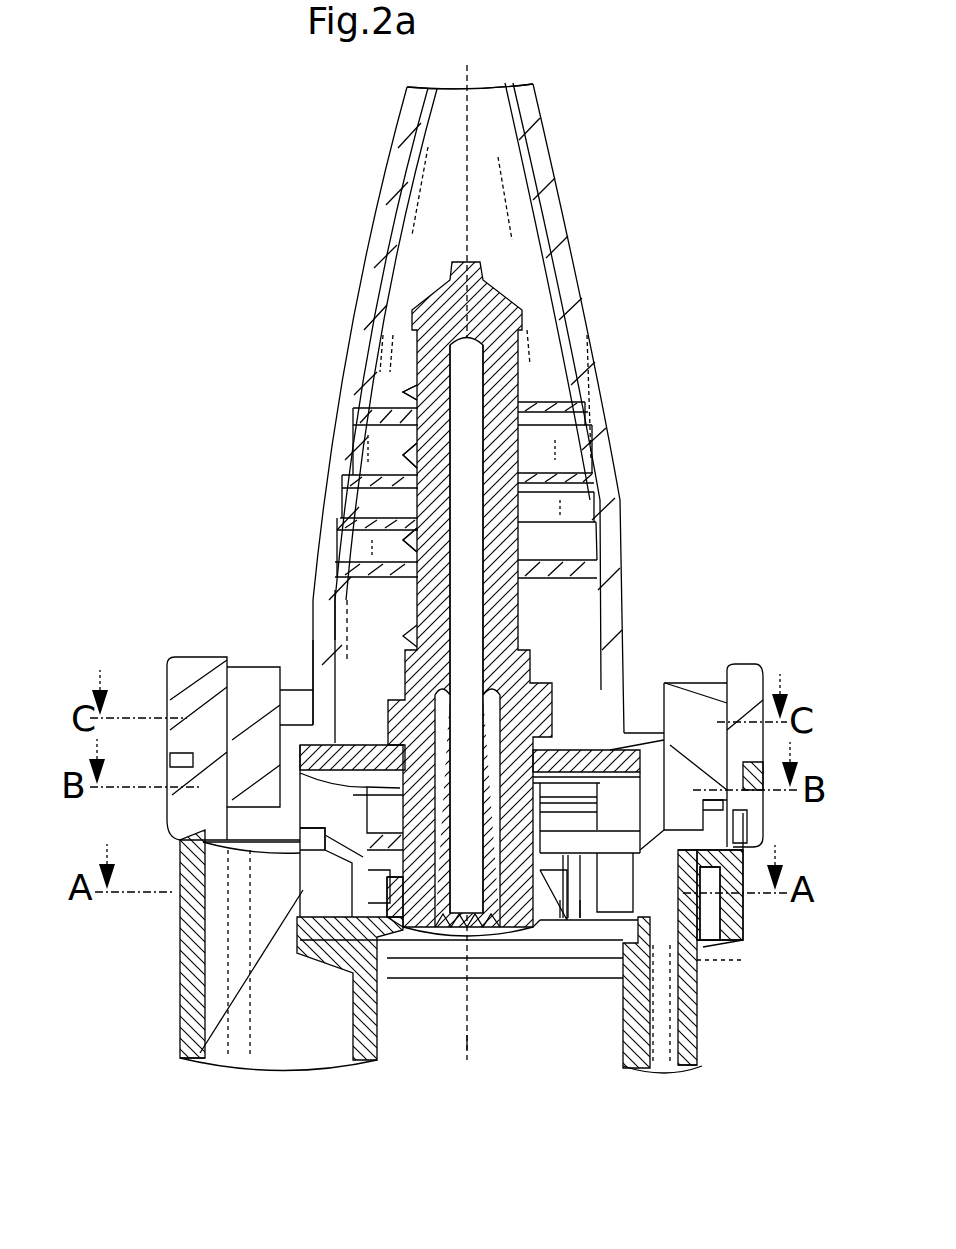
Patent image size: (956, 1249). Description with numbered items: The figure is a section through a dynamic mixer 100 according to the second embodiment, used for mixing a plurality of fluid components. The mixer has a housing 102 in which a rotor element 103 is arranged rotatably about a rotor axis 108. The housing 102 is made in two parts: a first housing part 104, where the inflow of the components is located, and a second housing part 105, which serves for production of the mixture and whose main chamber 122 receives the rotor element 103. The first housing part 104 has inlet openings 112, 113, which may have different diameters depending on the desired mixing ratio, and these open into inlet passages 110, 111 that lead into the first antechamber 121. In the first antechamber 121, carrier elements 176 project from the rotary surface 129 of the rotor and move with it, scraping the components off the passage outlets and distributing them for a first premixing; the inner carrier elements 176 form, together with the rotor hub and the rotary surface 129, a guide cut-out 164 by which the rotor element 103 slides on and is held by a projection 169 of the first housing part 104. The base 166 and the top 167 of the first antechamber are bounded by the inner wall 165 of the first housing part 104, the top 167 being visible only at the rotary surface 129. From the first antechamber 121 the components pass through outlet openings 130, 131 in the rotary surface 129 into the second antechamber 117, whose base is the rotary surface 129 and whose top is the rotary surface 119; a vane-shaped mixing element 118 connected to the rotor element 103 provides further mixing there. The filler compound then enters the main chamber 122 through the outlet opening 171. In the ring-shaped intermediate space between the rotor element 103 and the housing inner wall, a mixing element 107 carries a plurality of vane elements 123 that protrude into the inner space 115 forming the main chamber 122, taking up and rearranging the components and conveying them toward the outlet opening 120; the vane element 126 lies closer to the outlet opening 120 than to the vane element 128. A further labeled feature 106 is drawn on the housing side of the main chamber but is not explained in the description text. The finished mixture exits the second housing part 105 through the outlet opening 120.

The dynamic mixer 100 is at (230, 347).
The housing 102 is at (628, 547).
The rotor element 103 is at (512, 258).
The first housing part 104 is at (190, 918).
The second housing part 105 is at (172, 690).
The thread 106 is at (582, 472).
The mixing element 107 is at (595, 574).
The rotor axis 108 is at (470, 1042).
The inlet passage 110 is at (227, 965).
The inlet passage 111 is at (672, 1015).
The inlet opening 112 is at (257, 1075).
The inlet opening 113 is at (660, 1068).
The inner space 115 is at (365, 630).
The second antechamber 117 is at (200, 805).
The mixing element 118 is at (737, 900).
The rotary surface 119 is at (190, 762).
The outlet opening 120 is at (513, 83).
The first antechamber 121 is at (580, 918).
The main chamber 122 is at (320, 600).
The vane elements 123 is at (355, 414).
The vane element 126 is at (345, 480).
The vane element 128 is at (345, 565).
The rotary surface 129 is at (195, 1053).
The outlet opening 130 is at (220, 850).
The outlet opening 131 is at (563, 922).
The guide cut-out 164 is at (355, 960).
The inner wall 165 is at (710, 960).
The base 166 is at (680, 1066).
The top 167 is at (400, 960).
The projection 169 is at (540, 943).
The outlet opening 171 is at (545, 715).
The carrier elements 176 is at (705, 947).